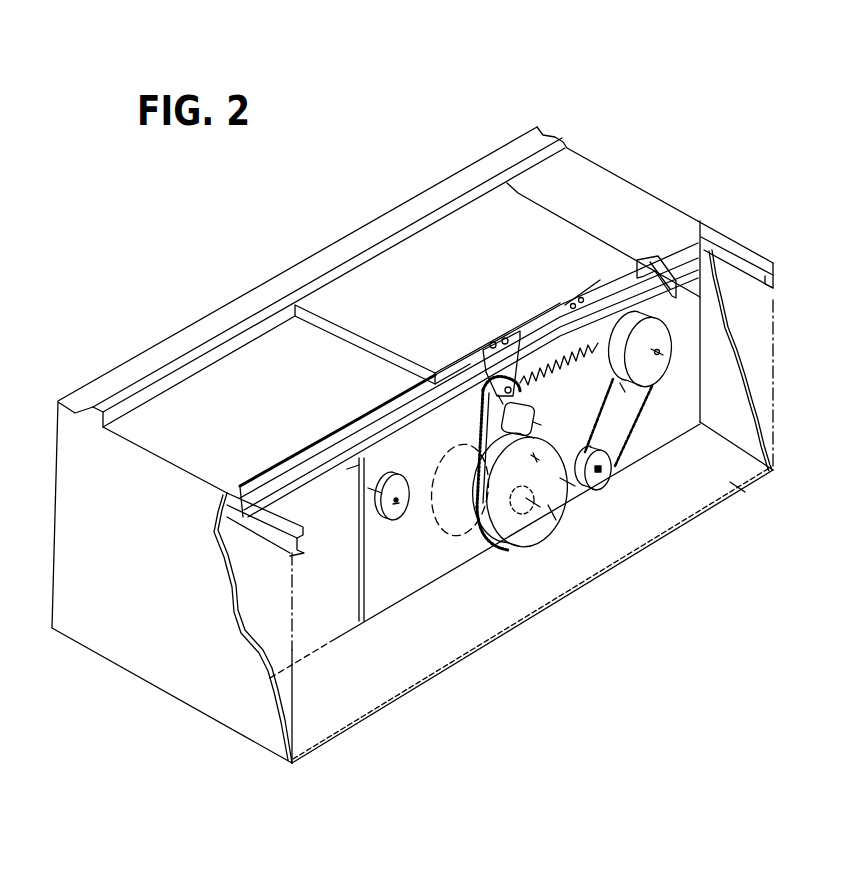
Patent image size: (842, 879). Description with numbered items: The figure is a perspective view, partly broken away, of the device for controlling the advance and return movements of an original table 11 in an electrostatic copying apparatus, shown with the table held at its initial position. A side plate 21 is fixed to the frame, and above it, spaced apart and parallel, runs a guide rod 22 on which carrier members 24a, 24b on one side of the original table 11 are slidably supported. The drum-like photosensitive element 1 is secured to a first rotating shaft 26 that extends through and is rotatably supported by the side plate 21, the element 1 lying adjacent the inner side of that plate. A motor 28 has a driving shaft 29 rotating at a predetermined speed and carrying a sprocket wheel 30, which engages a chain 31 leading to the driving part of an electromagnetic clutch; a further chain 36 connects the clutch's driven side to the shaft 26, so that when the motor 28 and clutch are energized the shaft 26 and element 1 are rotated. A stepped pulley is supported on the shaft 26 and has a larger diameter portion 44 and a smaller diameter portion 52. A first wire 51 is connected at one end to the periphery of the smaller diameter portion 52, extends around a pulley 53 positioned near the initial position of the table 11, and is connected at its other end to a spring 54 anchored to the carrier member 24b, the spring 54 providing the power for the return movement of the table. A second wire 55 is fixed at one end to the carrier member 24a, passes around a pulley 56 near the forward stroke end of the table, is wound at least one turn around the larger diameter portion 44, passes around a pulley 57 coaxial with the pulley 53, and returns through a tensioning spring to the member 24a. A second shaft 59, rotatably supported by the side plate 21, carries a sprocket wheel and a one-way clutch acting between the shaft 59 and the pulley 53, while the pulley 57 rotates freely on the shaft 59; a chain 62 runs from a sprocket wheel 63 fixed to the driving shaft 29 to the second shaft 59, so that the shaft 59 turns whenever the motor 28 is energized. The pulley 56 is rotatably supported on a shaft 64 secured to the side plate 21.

The drum-like photosensitive element 1 is at (441, 510).
The original table 11 is at (420, 283).
The side plate 21 is at (393, 598).
The guide rod 22 is at (631, 278).
The carrier member 24a is at (597, 297).
The carrier member 24b is at (490, 338).
The first rotating shaft 26 is at (537, 507).
The motor 28 is at (503, 350).
The driving shaft 29 is at (592, 482).
The sprocket wheel 30 is at (567, 480).
The chain 31 is at (559, 408).
The chain 36 is at (470, 515).
The larger diameter portion 44 is at (552, 513).
The first wire 51 is at (737, 487).
The smaller diameter portion 52 is at (522, 505).
The pulley 53 is at (657, 280).
The spring 54 is at (550, 378).
The second wire 55 is at (417, 462).
The pulley 56 is at (385, 510).
The pulley 57 is at (660, 333).
The second shaft 59 is at (657, 352).
The chain 62 is at (625, 390).
The sprocket wheel 63 is at (602, 477).
The shaft 64 is at (403, 507).